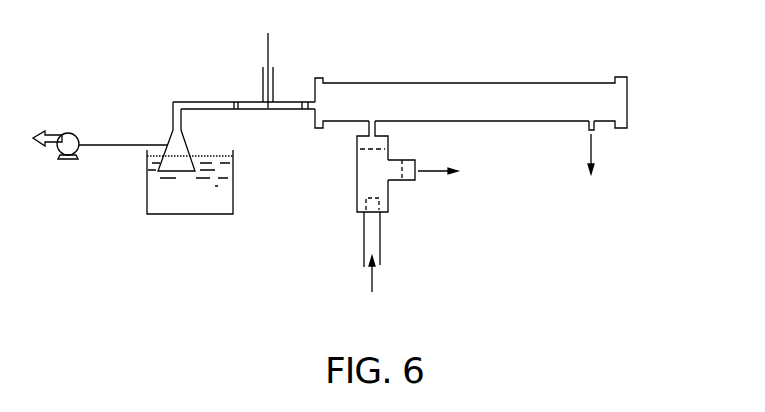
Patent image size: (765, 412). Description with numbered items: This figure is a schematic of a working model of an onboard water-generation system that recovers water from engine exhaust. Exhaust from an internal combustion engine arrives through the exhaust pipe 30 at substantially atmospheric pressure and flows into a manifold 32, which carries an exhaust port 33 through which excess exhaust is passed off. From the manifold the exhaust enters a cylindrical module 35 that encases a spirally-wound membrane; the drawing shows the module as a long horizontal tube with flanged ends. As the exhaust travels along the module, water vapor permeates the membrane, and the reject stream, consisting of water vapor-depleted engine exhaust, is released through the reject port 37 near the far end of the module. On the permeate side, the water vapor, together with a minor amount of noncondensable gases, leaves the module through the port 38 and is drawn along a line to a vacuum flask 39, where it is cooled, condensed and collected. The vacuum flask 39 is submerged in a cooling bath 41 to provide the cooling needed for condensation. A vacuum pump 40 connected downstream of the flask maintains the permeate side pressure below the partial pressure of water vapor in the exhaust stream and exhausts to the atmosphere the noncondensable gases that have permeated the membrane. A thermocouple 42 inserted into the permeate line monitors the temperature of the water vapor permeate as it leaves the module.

The internal combustion engine exhaust pipe 30 is at (387, 240).
The manifold 32 is at (356, 163).
The exhaust port 33 is at (410, 158).
The cylindrical module 35 is at (493, 82).
The reject port 37 is at (598, 128).
The port 38 is at (307, 100).
The vacuum flask 39 is at (176, 162).
The vacuum pump 40 is at (75, 132).
The cooling bath 41 is at (185, 204).
The thermocouple 42 is at (266, 44).